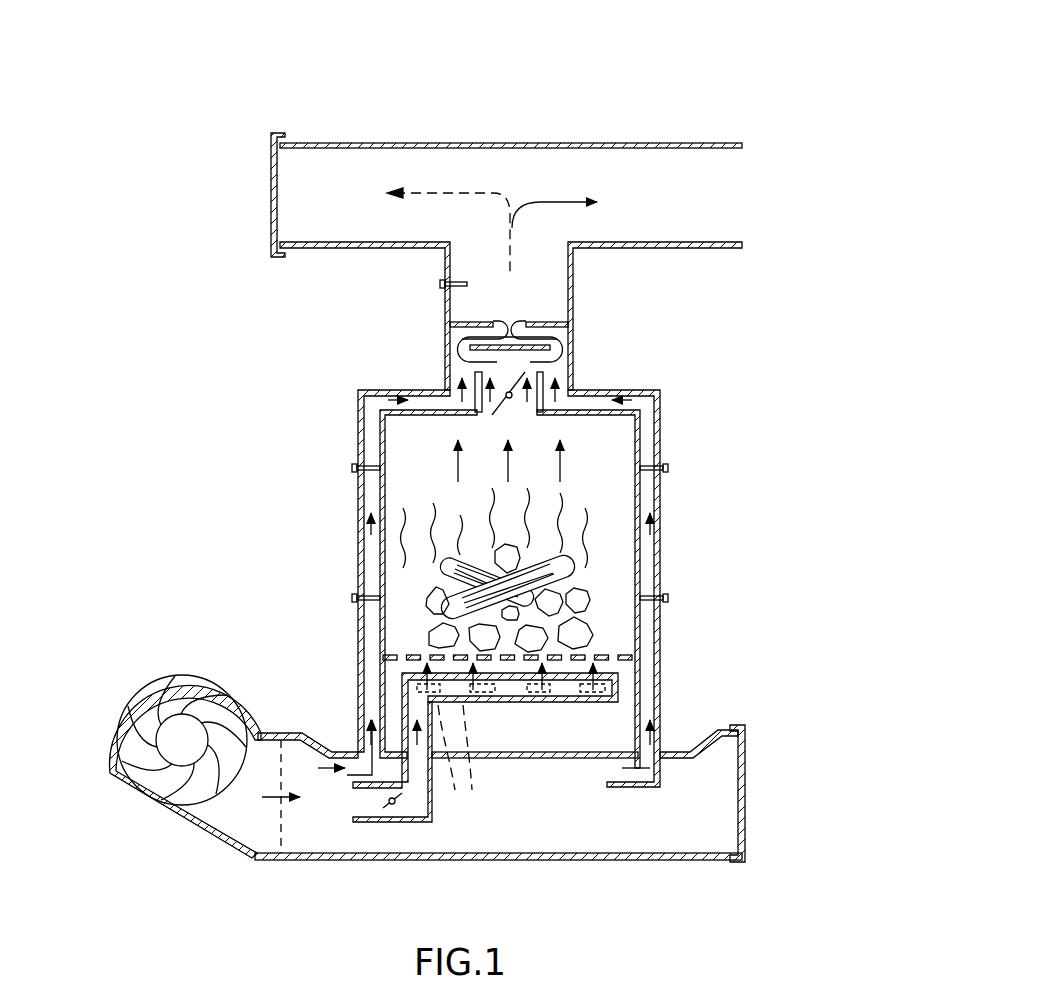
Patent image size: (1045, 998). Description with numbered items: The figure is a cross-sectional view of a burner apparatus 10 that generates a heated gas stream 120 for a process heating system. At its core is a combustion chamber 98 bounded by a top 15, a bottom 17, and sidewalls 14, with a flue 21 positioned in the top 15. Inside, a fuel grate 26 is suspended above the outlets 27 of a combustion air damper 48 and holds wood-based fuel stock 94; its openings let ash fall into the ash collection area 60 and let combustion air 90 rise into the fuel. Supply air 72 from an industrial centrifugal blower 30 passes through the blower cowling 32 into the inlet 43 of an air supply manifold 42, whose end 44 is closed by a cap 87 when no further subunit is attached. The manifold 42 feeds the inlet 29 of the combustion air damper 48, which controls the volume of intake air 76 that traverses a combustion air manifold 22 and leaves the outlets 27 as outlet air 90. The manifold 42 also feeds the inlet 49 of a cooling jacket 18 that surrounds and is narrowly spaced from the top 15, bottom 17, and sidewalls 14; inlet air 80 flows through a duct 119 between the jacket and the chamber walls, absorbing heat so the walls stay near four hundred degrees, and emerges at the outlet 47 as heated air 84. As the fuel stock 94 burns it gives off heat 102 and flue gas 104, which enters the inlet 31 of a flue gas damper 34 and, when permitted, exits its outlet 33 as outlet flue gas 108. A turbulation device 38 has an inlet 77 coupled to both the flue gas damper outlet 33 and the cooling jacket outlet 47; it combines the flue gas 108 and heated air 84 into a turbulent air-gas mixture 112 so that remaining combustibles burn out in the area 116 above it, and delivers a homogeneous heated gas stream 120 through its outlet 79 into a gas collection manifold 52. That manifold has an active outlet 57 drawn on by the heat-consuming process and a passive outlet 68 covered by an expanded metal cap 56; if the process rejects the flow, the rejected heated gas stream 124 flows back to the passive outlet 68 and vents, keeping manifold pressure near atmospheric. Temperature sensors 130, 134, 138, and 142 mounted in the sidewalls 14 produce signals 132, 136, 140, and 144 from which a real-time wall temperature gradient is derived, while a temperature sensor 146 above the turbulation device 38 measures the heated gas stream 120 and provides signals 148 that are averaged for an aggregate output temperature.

The burner apparatus 10 is at (540, 78).
The sidewalls 14 is at (650, 498).
The top 15 is at (615, 398).
The bottom 17 is at (518, 760).
The cooling jacket 18 is at (662, 536).
The flue 21 is at (543, 395).
The combustion air manifold 22 is at (620, 692).
The fuel grate 26 is at (407, 652).
The outlets 27 is at (455, 755).
The inlet 29 is at (362, 808).
The blower 30 is at (188, 683).
The inlet 31 is at (524, 461).
The blower cowling 32 is at (190, 838).
The outlet 33 is at (517, 366).
The flue gas damper 34 is at (474, 461).
The turbulation device 38 is at (583, 286).
The air supply manifold 42 is at (530, 861).
The inlet 43 is at (282, 732).
The air supply manifold end 44 is at (712, 862).
The outlet 47 is at (452, 368).
The combustion air damper 48 is at (393, 812).
The inlet 49 is at (318, 762).
The gas collection manifold 52 is at (682, 142).
The expanded metal cap 56 is at (268, 206).
The active outlet 57 is at (710, 178).
The ash collection area 60 is at (548, 735).
The passive outlet 68 is at (298, 192).
The air supply 72 is at (258, 792).
The intake air 76 is at (380, 797).
The inlet 77 is at (505, 357).
The outlet 79 is at (468, 300).
The inlet air 80 is at (370, 730).
The heated air 84 is at (436, 392).
The cap 87 is at (745, 762).
The outlet air 90 is at (425, 668).
The fuel stock 94 is at (560, 602).
The combustion chamber 98 is at (413, 583).
The heat 102 is at (460, 503).
The flue gas 104 is at (563, 467).
The outlet flue gas 108 is at (477, 404).
The turbulent air-gas mixture 112 is at (492, 310).
The area above the turbulation device 116 is at (523, 275).
The duct 119 is at (358, 500).
The heated gas stream 120 is at (565, 199).
The rejected heated gas stream 124 is at (447, 192).
The temperature sensor 130 is at (667, 597).
The signal 132 is at (668, 600).
The temperature sensor 134 is at (667, 465).
The signal 136 is at (668, 470).
The temperature sensor 138 is at (353, 597).
The signal 140 is at (352, 600).
The temperature sensor 142 is at (353, 465).
The signal 144 is at (352, 470).
The temperature sensor 146 is at (440, 283).
The signals 148 is at (440, 287).